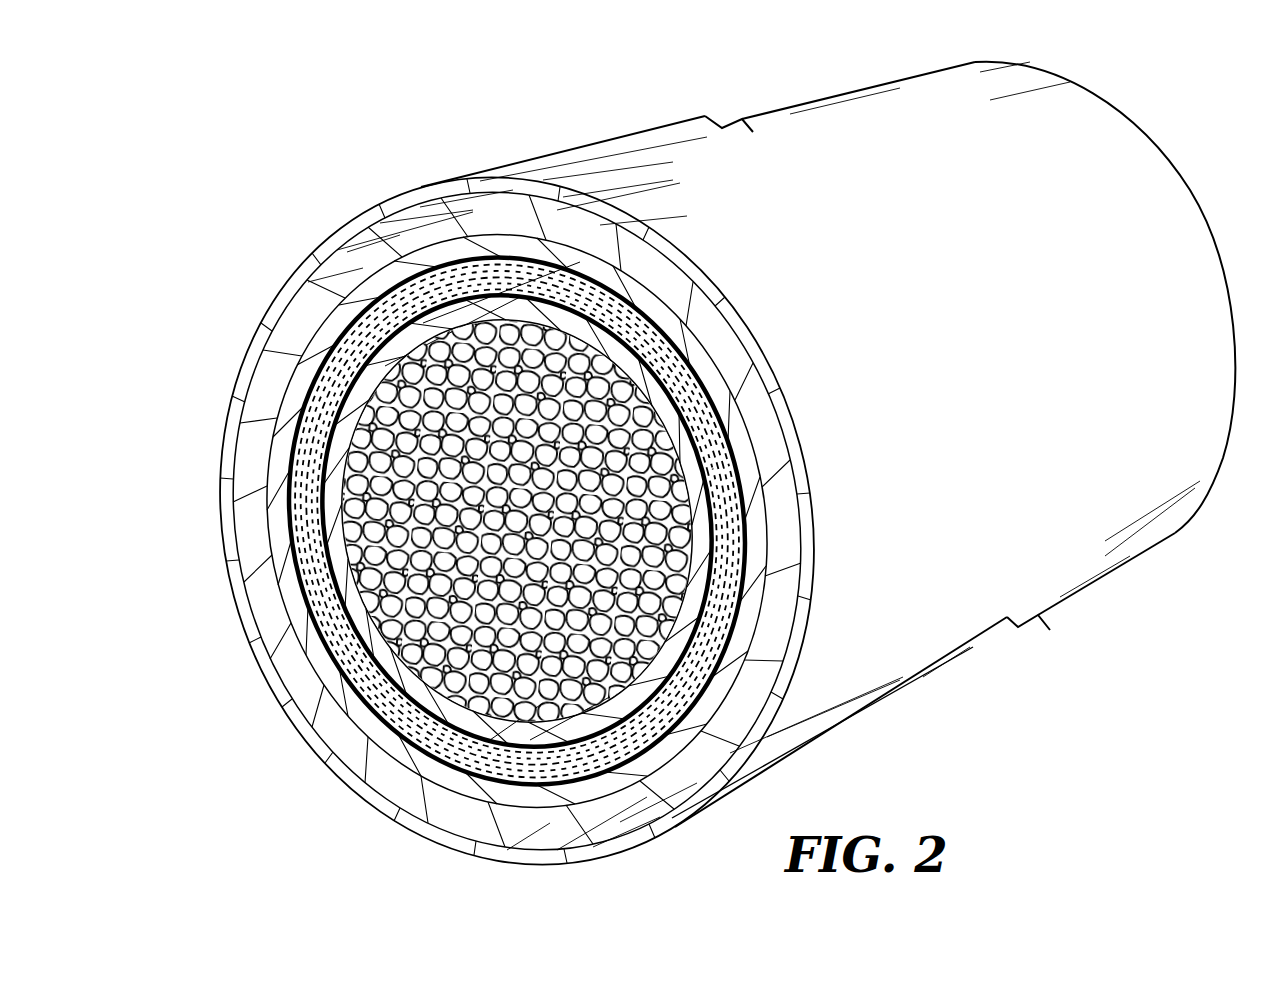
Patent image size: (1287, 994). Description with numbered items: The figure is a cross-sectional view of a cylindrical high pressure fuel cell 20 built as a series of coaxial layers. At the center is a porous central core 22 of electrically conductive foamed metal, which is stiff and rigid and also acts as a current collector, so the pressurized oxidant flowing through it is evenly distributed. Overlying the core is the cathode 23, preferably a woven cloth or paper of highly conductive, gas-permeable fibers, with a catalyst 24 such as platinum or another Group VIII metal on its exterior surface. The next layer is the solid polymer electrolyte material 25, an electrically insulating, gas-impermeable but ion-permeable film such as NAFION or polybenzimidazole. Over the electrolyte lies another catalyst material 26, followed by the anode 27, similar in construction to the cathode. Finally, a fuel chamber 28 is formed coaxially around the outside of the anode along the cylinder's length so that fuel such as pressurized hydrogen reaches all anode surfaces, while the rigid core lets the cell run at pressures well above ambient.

The cylindrical fuel cell 20 is at (1017, 769).
The porous central core 22 is at (313, 382).
The cathode 23 is at (355, 705).
The catalyst 24 is at (380, 650).
The solid polymer electrolyte material 25 is at (307, 560).
The catalyst material 26 is at (291, 513).
The anode 27 is at (277, 485).
The fuel chamber 28 is at (257, 427).